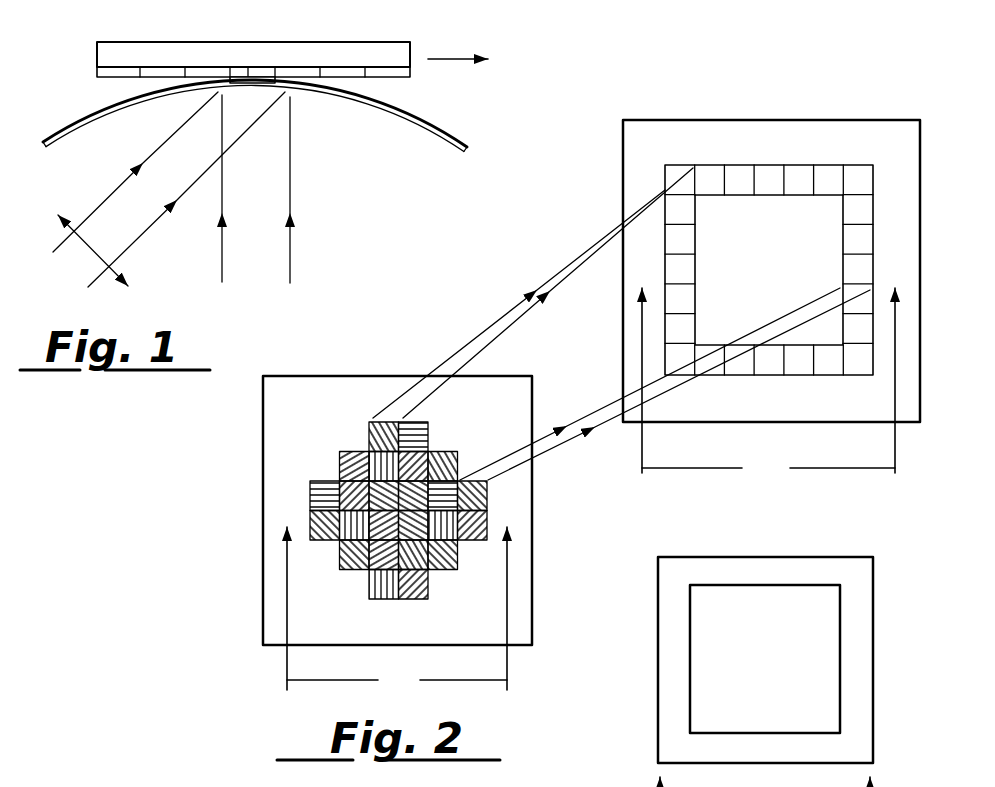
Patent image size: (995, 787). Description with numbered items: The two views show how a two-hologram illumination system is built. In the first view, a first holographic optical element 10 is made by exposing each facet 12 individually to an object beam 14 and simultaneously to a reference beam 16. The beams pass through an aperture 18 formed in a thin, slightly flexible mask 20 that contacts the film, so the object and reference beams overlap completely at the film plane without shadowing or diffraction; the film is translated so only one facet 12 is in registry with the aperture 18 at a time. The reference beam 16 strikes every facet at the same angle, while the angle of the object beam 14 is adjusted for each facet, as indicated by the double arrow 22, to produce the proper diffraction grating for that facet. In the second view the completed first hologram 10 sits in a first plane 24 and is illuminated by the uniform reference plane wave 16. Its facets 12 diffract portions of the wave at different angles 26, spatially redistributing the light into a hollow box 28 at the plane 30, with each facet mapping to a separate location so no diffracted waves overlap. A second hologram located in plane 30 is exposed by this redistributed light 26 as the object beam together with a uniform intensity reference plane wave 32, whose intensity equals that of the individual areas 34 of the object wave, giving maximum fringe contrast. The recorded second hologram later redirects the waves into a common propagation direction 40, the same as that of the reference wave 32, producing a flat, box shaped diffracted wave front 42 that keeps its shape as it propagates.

In FIG. 1, the first holographic optical element 10 is at (312, 42).
In FIG. 2, the first holographic optical element 10 is at (330, 505).
In FIG. 1, the facet 12 is at (110, 78).
In FIG. 2, the facet 12 is at (356, 450).
In FIG. 1, the object beam 14 is at (120, 188).
In FIG. 1, the reference beam 16 is at (222, 238).
In FIG. 2, the reference beam 16 is at (397, 610).
In FIG. 1, the aperture 18 is at (256, 84).
In FIG. 1, the mask 20 is at (437, 125).
In FIG. 1, the double arrow 22 is at (88, 258).
In FIG. 2, the first plane 24 is at (263, 460).
In FIG. 2, the diffracted light at different angles 26 is at (493, 313).
In FIG. 2, the hollow box 28 is at (809, 249).
In FIG. 2, the plane 30 is at (662, 118).
In FIG. 2, the reference plane wave 32 is at (768, 384).
In FIG. 2, the individual areas 34 is at (770, 180).
In FIG. 2, the common propagation direction 40 is at (765, 782).
In FIG. 2, the diffracted wave front 42 is at (875, 655).